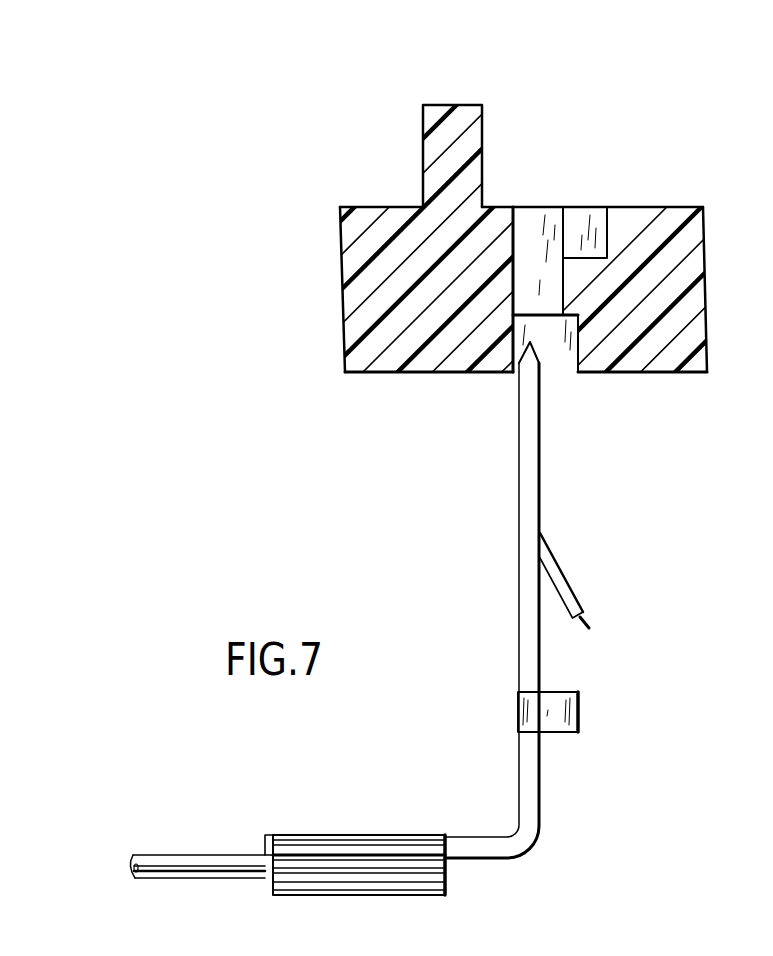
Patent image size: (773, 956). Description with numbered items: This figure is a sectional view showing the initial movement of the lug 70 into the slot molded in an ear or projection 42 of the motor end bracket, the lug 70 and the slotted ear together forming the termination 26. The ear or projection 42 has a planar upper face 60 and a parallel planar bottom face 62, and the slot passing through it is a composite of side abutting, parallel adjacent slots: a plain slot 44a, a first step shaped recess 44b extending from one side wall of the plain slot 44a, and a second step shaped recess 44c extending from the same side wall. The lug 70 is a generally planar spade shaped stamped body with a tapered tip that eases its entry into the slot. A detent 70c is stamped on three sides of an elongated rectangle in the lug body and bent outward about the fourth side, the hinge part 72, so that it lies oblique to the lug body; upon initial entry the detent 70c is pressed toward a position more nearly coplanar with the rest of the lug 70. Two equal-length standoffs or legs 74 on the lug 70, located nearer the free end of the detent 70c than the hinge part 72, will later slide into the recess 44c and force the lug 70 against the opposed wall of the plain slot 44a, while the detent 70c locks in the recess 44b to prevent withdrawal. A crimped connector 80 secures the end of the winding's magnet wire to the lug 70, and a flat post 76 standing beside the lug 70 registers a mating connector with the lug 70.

The termination 26 is at (640, 146).
The ear or projection 42 is at (706, 277).
The plain slot 44a is at (528, 212).
The first step shaped recess 44b is at (601, 222).
The second step shaped recess 44c is at (558, 370).
The planar upper face 60 is at (680, 207).
The planar bottom face 62 is at (688, 373).
The lug 70 is at (518, 636).
The detent 70c is at (577, 590).
The hinge part 72 is at (547, 546).
The standoffs or legs 74 is at (580, 708).
The flat post 76 is at (437, 103).
The crimped connector 80 is at (334, 835).